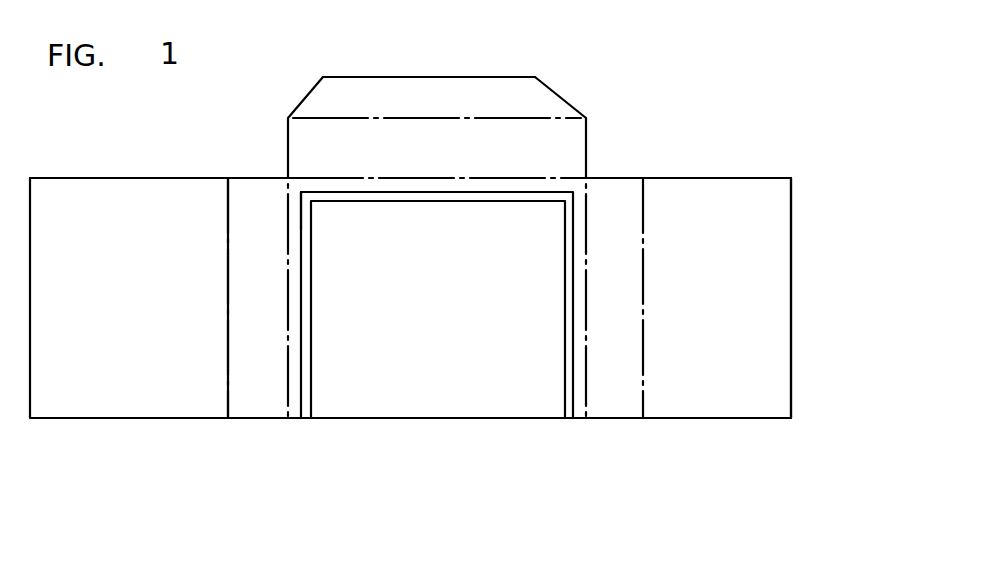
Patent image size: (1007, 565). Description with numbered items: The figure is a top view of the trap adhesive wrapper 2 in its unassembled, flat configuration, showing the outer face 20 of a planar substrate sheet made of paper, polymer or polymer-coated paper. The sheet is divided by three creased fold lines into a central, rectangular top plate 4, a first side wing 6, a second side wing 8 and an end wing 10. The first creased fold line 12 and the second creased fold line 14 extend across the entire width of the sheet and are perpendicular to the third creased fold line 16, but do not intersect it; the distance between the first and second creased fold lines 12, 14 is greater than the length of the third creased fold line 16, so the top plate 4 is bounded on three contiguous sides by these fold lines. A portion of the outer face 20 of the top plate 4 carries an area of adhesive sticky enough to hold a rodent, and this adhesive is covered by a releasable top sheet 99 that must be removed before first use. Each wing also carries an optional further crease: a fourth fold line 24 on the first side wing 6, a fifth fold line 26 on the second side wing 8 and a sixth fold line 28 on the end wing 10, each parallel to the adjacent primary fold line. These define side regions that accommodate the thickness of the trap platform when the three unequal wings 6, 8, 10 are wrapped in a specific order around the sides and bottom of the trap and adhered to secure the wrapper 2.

The trap adhesive wrapper 2 is at (118, 475).
The top plate 4 is at (575, 415).
The first side wing 6 is at (163, 189).
The second side wing 8 is at (707, 183).
The end wing 10 is at (573, 138).
The first creased fold line 12 is at (288, 296).
The second creased fold line 14 is at (587, 308).
The third creased fold line 16 is at (547, 177).
The outer face 20 is at (447, 372).
The fourth fold line 24 is at (228, 225).
The fifth fold line 26 is at (643, 218).
The sixth fold line 28 is at (416, 118).
The releasable top sheet 99 is at (313, 180).